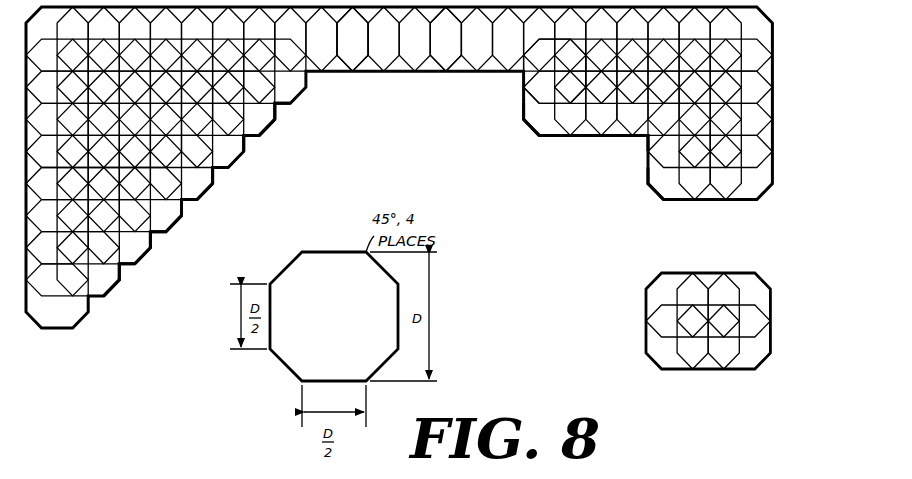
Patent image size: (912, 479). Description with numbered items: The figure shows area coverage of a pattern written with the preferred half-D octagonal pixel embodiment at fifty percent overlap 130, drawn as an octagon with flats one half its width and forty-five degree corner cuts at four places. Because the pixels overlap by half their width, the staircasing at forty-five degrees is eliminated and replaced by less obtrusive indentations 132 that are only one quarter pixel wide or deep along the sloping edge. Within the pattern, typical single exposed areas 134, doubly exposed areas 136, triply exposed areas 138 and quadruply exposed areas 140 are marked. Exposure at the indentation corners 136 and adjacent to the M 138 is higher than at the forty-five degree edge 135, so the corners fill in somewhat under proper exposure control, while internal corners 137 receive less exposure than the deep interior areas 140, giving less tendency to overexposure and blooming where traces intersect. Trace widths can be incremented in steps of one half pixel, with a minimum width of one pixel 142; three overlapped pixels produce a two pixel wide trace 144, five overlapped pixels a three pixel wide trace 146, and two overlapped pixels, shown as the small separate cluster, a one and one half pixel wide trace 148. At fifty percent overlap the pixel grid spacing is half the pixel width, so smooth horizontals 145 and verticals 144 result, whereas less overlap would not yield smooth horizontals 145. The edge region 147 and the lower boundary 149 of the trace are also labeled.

The ½-D pixel embodiment at 50% overlap 130 is at (347, 334).
The indentations 132 is at (121, 274).
The single exposed area 134 is at (262, 118).
The 45 degree edge 135 is at (207, 188).
The doubly exposed area 136 is at (238, 130).
The internal corners 137 is at (648, 143).
The triply exposed area 138 is at (196, 154).
The quadruply exposed area 140 is at (125, 197).
The one pixel wide trace 142 is at (443, 60).
The two pixel wide trace 144 is at (545, 91).
The smooth horizontal 145 is at (354, 60).
The three pixel wide trace 146 is at (663, 202).
The inner corner 147 is at (542, 130).
The 1½ pixel wide trace 148 is at (645, 322).
The bottom edge 149 is at (695, 196).